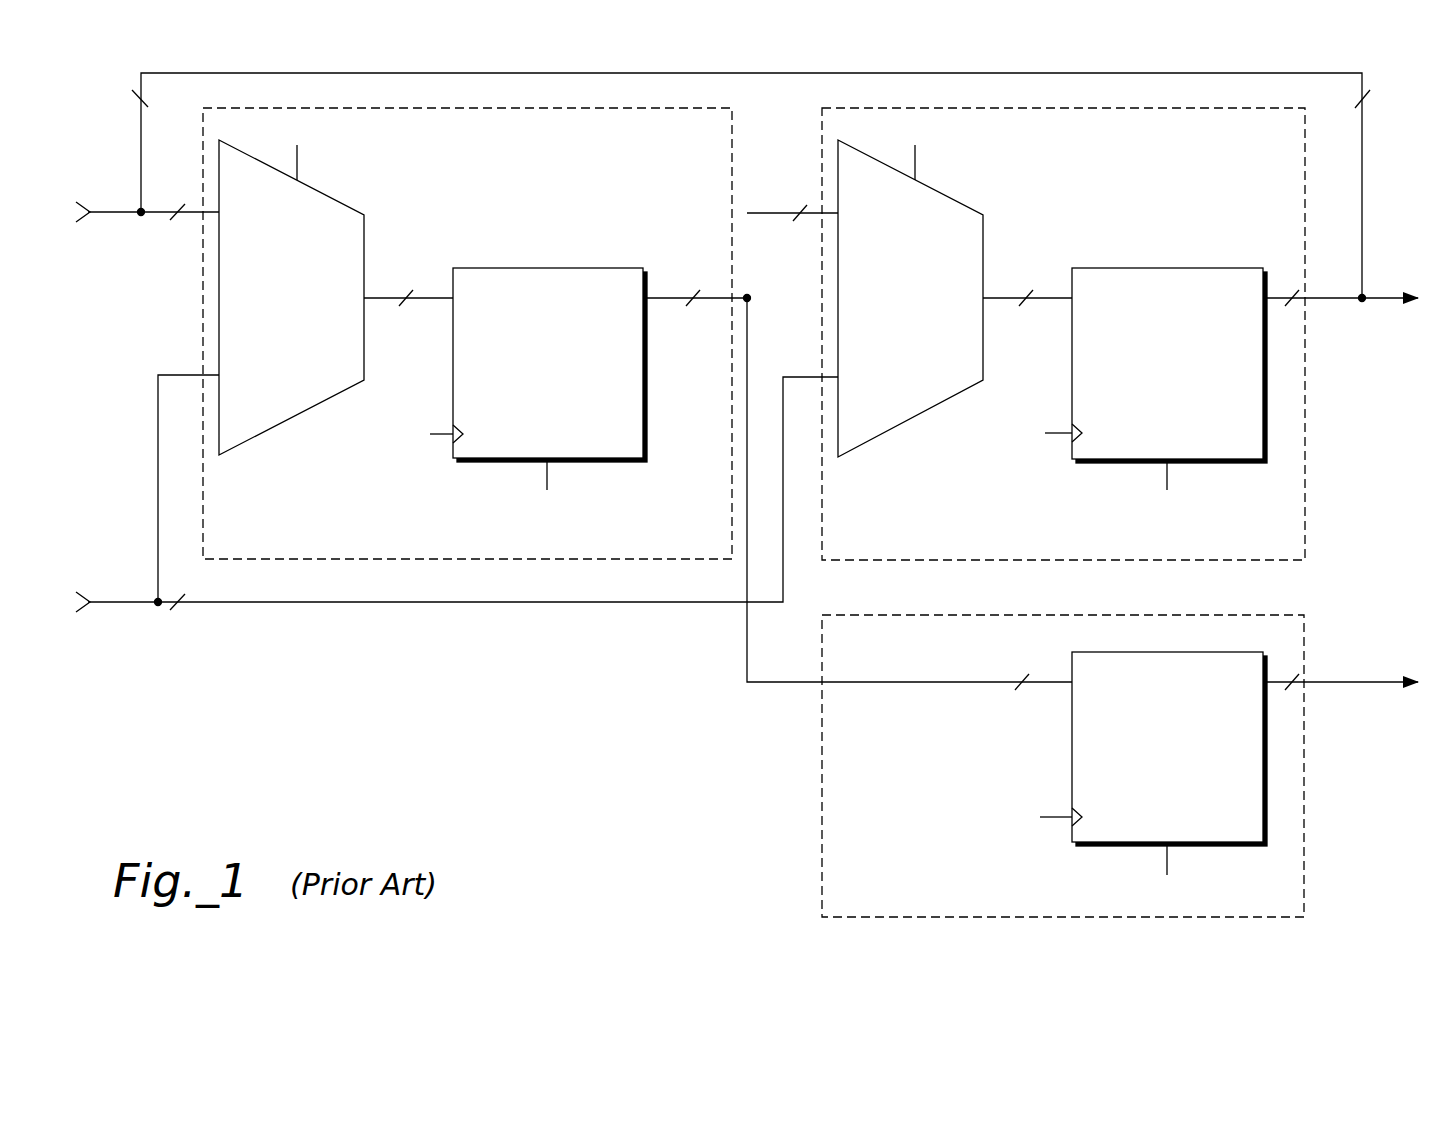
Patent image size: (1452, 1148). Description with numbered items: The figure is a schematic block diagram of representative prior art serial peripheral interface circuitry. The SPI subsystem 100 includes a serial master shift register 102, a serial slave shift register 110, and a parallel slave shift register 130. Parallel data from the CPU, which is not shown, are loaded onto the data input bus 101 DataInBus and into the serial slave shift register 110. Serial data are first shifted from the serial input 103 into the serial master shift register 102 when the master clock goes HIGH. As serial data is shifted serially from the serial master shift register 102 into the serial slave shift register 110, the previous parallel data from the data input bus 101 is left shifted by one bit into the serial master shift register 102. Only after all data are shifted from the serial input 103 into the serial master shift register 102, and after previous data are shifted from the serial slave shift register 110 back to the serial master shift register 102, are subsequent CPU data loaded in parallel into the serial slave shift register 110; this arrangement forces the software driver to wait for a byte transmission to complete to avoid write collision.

The SPI subsystem 100 is at (193, 717).
The data input bus 101 is at (100, 602).
The serial master shift register 102 is at (735, 150).
The serial input 103 is at (100, 212).
The serial slave shift register 110 is at (1308, 150).
The parallel slave shift register 130 is at (1308, 638).